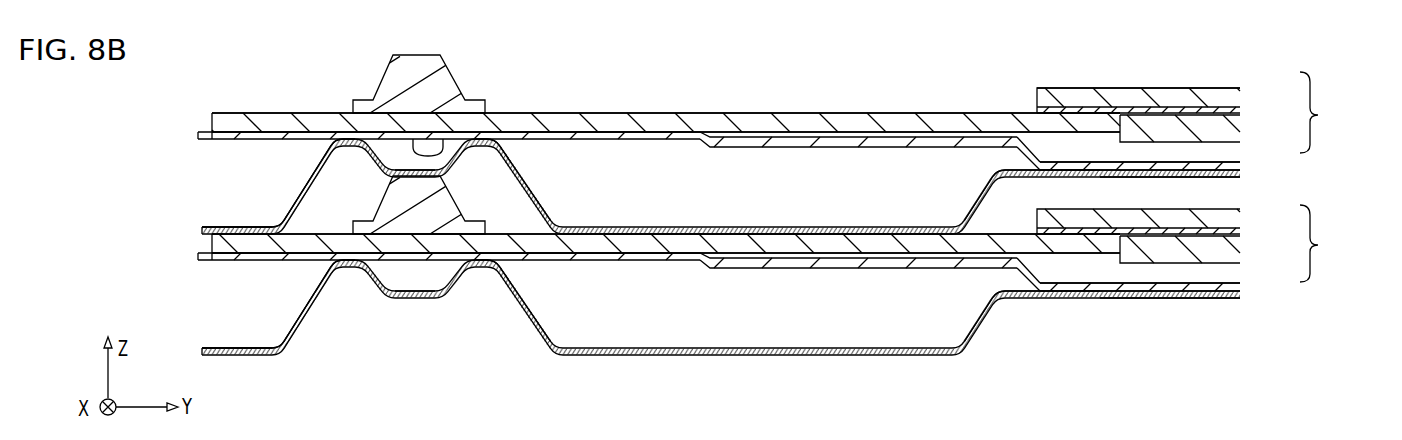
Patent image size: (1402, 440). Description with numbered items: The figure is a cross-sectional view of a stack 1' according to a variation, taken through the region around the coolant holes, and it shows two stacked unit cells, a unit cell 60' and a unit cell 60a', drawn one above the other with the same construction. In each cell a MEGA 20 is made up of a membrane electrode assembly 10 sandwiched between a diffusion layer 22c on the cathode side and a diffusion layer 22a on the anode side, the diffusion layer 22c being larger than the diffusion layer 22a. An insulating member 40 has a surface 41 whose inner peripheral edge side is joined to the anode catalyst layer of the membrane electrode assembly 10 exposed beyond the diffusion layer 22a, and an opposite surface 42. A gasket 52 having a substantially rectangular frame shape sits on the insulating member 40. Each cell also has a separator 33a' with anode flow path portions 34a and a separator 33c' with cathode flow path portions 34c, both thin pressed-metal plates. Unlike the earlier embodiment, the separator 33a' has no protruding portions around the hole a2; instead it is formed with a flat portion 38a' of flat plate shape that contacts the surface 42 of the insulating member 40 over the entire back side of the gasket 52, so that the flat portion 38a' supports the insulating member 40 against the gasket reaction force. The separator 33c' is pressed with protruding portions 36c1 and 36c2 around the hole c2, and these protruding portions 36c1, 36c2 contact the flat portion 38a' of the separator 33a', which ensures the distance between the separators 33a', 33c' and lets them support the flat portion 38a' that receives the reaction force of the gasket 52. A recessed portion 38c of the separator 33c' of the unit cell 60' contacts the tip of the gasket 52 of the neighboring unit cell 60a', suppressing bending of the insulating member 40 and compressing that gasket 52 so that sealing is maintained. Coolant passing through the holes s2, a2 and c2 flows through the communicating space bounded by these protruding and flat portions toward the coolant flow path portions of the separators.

The stack 1' is at (1195, 44).
The membrane electrode assembly 10 is at (1225, 112).
The MEGA 20 is at (1322, 177).
The diffusion layer 22a is at (1227, 133).
The diffusion layer 22c is at (1227, 98).
The separator 33a' is at (1188, 232).
The separator 33c' is at (1218, 255).
The anode flow path portion 34a is at (1043, 166).
The cathode flow path portion 34c is at (1072, 178).
The protruding portion 36c1 is at (333, 149).
The protruding portion 36c2 is at (500, 139).
The flat portion 38a' is at (427, 181).
The recessed portion 38c is at (447, 176).
The insulating member 40 is at (668, 114).
The surface 41 is at (613, 114).
The surface 42 is at (820, 148).
The gasket 52 is at (393, 62).
The unit cell 60' is at (1209, 167).
The unit cell 60a' is at (1211, 298).
The hole s2 is at (212, 125).
The hole a2 is at (212, 133).
The hole c2 is at (212, 228).